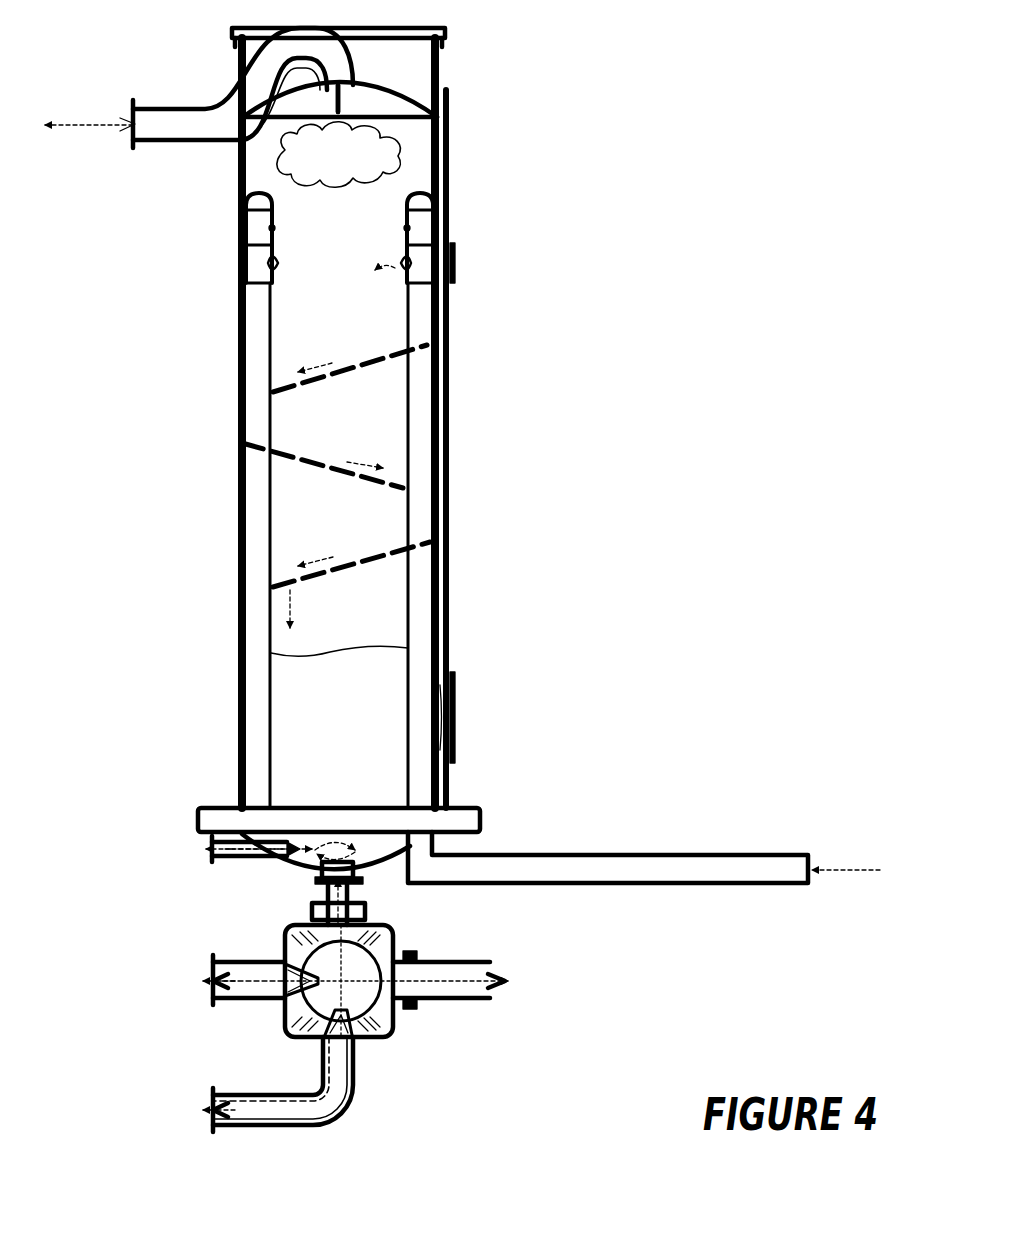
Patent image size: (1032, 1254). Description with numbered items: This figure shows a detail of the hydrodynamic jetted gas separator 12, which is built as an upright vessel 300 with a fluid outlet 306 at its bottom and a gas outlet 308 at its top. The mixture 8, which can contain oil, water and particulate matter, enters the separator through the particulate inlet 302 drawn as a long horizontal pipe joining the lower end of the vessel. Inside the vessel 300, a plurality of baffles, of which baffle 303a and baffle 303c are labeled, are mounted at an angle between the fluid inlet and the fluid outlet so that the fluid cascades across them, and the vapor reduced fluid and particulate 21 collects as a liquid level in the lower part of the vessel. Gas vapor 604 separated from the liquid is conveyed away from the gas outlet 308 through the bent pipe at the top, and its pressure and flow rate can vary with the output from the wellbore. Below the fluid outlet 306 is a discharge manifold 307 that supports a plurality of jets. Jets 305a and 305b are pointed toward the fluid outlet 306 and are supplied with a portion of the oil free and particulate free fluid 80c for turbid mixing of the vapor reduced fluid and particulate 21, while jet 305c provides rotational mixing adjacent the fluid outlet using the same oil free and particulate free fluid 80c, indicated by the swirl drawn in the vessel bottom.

The hydrodynamic jetted gas separator 12 is at (462, 596).
The gas vapor 604 is at (173, 112).
The gas outlet 308 is at (352, 84).
The vessel 300 is at (241, 160).
The baffle 303a is at (357, 368).
The baffle 303c is at (357, 563).
The vapor reduced fluid and particulate 21 is at (334, 650).
The particulate inlet 302 is at (648, 853).
The mixture 8 is at (843, 868).
The oil free and particulate free fluid 80c is at (250, 860).
The jet 305a is at (315, 975).
The jet 305b is at (318, 1036).
The jet 305c is at (296, 860).
The fluid outlet 306 is at (362, 868).
The discharge manifold 307 is at (395, 1028).